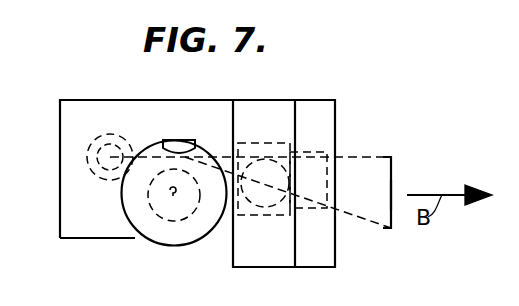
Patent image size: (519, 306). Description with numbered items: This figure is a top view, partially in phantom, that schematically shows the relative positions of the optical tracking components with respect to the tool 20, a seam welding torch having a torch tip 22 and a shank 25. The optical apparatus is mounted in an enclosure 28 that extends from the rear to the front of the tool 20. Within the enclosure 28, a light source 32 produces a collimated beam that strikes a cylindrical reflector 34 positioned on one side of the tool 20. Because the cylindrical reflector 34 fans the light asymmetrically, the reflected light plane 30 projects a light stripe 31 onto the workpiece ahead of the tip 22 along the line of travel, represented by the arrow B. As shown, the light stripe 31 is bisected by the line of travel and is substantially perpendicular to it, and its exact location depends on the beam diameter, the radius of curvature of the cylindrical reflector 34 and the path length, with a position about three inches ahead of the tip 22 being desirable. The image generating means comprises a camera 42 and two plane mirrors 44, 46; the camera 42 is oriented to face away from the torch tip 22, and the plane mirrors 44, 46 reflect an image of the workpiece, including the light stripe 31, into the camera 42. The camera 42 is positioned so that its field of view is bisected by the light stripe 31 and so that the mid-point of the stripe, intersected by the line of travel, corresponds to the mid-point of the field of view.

The tool 20 is at (136, 244).
The torch tip 22 is at (170, 200).
The shank 25 is at (190, 216).
The enclosure 28 is at (80, 100).
The light plane 30 is at (368, 159).
The light stripe 31 is at (392, 193).
The light source 32 is at (90, 158).
The cylindrical reflector 34 is at (174, 140).
The camera 42 is at (261, 210).
The plane mirror 44 is at (265, 143).
The plane mirror 46 is at (319, 150).